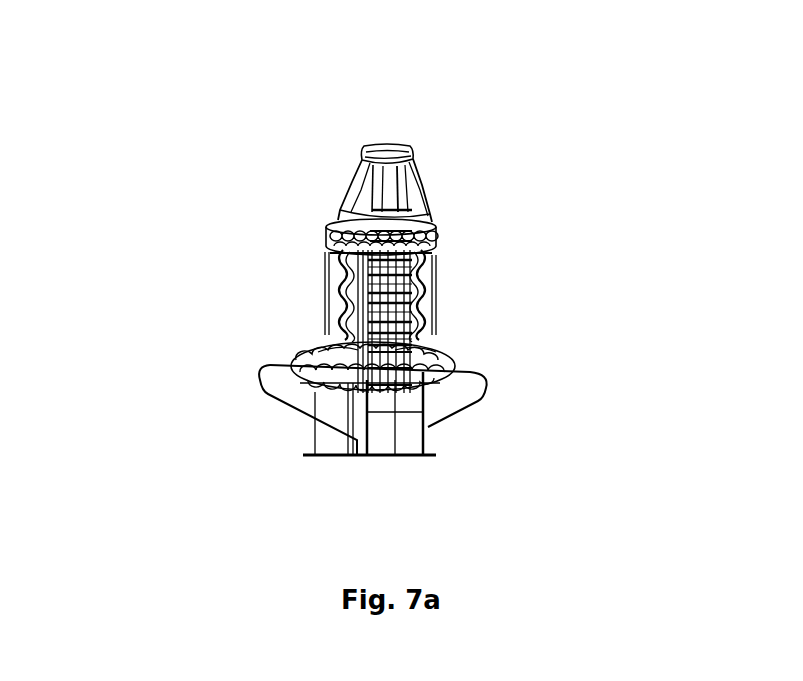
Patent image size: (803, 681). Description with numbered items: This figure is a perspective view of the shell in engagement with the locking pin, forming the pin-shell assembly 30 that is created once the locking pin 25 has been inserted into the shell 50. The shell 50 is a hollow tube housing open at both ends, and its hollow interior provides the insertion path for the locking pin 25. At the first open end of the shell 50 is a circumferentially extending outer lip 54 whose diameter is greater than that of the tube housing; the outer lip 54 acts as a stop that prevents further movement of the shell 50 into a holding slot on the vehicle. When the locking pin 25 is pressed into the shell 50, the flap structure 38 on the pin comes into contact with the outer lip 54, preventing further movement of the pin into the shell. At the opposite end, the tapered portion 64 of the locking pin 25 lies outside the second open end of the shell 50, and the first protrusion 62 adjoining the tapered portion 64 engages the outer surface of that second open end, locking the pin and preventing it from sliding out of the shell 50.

The pin-shell assembly 30 is at (250, 186).
The locking pin 25 is at (380, 152).
The tapered portion 64 is at (425, 162).
The first protrusion 62 is at (435, 212).
The shell 50 is at (437, 317).
The outer lip 54 is at (455, 357).
The flap structure 38 is at (277, 378).